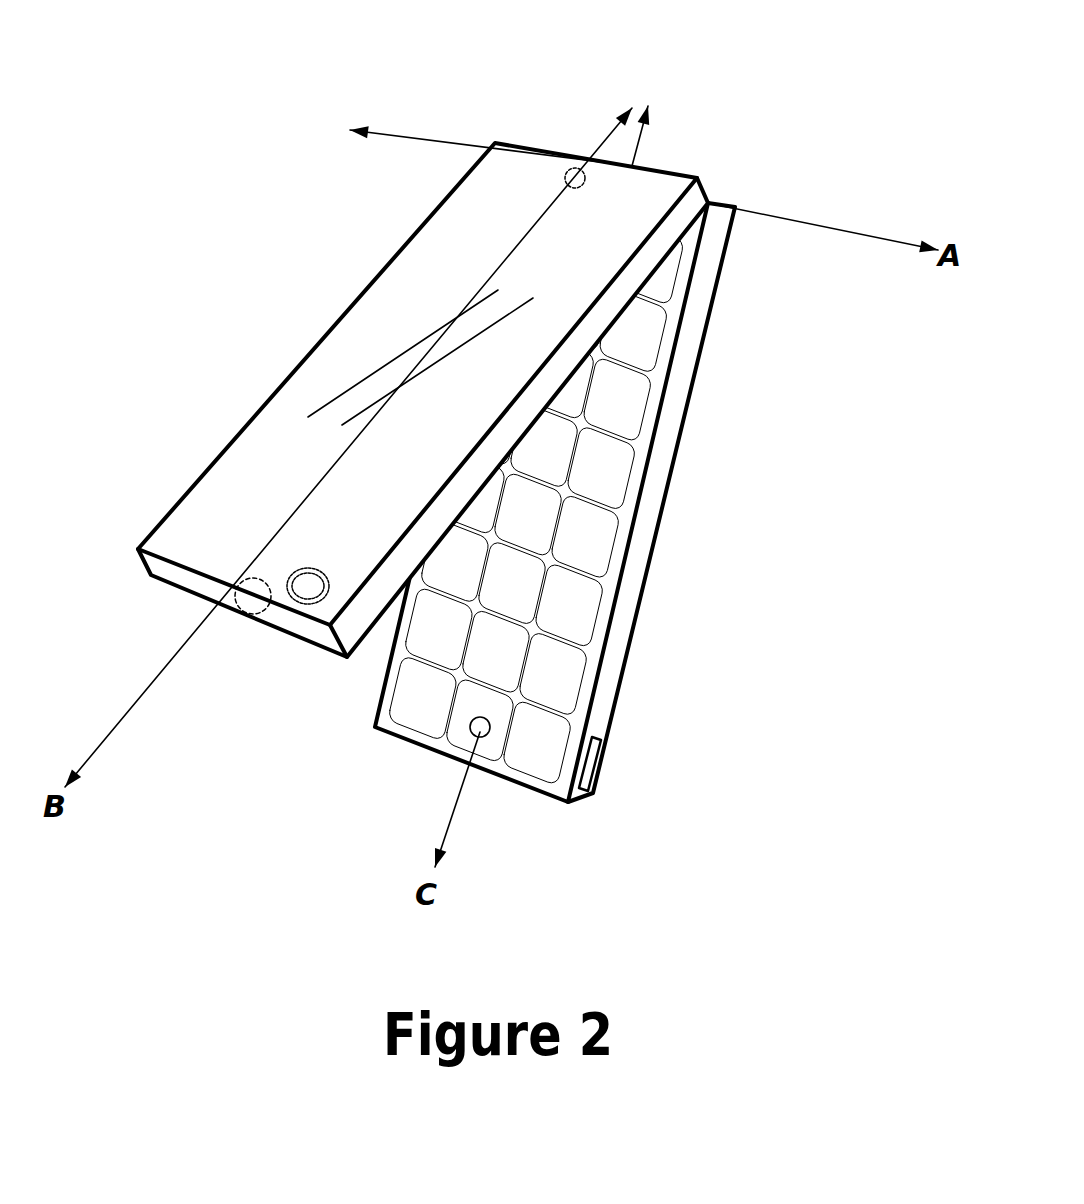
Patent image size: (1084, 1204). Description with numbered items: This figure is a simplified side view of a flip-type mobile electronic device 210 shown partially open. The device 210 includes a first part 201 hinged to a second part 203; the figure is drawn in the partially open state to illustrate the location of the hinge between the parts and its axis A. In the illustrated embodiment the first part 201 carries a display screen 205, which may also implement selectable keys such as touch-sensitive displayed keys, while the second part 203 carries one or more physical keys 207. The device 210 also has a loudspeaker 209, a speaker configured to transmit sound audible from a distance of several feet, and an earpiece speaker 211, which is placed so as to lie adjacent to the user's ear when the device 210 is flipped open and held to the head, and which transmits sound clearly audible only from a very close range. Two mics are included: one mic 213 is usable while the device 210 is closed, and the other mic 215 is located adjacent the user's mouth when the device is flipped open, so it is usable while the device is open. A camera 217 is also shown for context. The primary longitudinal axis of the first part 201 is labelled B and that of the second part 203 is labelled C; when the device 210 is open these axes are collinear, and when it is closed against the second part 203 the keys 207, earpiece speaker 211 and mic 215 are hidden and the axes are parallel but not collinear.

The flip-type device 210 is at (421, 438).
The first part 201 is at (380, 391).
The second part 203 is at (554, 518).
The display screen 205 is at (182, 537).
The physical keys 207 is at (430, 717).
The loudspeaker 209 is at (590, 758).
The earpiece speaker 211 is at (247, 603).
The mic 213 is at (571, 170).
The mic 215 is at (480, 737).
The camera 217 is at (308, 582).